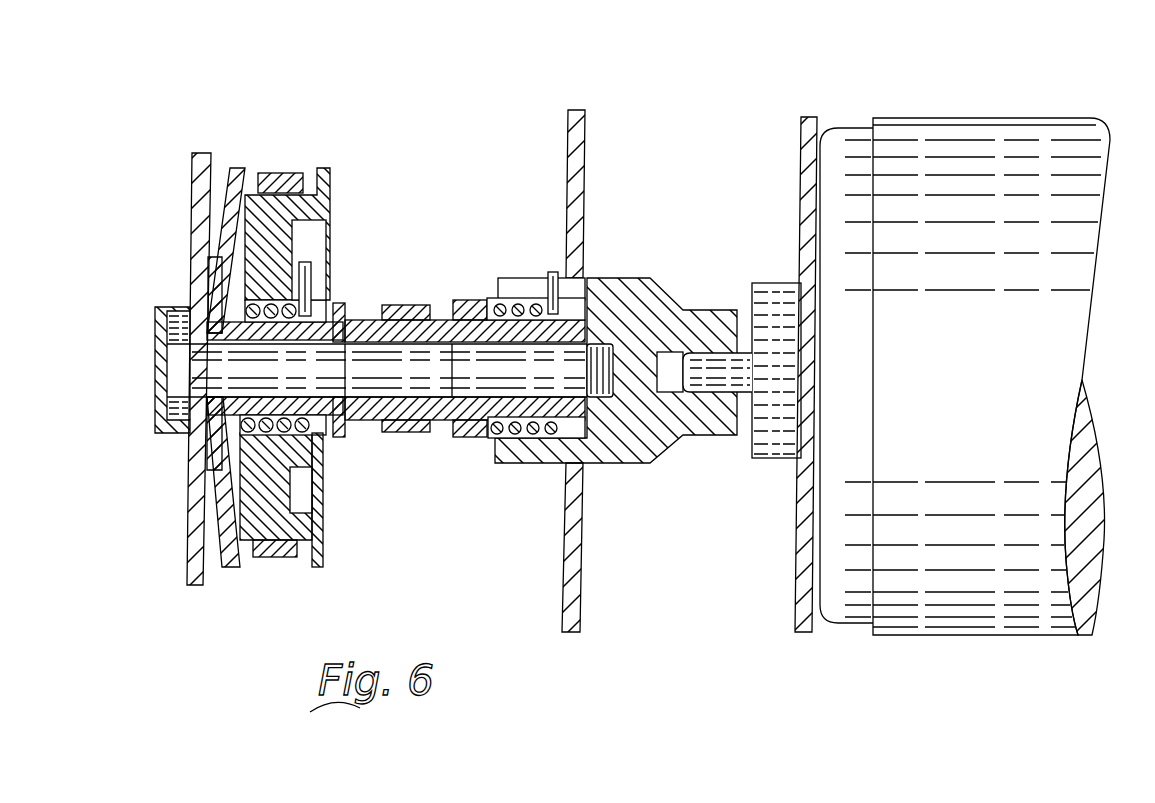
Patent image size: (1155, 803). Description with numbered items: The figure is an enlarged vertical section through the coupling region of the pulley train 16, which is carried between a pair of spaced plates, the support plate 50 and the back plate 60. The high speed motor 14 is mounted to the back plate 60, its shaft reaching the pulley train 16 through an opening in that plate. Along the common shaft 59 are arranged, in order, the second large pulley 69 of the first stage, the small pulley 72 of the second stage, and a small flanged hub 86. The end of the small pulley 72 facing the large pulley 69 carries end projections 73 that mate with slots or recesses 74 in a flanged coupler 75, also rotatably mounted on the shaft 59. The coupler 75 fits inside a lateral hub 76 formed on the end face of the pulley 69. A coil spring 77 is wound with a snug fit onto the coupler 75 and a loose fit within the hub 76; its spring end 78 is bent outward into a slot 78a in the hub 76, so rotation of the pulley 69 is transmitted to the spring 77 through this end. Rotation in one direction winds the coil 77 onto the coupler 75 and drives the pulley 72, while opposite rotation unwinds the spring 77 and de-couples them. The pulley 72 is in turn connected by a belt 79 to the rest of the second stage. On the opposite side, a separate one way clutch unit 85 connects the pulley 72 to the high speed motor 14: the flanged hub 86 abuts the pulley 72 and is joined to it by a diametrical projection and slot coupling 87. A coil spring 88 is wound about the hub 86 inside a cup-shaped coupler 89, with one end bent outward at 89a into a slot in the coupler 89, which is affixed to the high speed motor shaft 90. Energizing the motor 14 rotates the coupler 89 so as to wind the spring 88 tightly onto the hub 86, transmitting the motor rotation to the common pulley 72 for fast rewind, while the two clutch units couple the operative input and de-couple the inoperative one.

The high speed motor 14 is at (935, 118).
The pulley train 16 is at (307, 148).
The support plate 50 is at (195, 568).
The common shaft 59 is at (198, 377).
The back plate 60 is at (587, 127).
The second large pulley 69 is at (247, 215).
The small pulley 72 is at (440, 417).
The end projections 73 is at (345, 320).
The slots or recesses 74 is at (340, 430).
The flanged coupler 75 is at (333, 450).
The lateral hub 76 is at (253, 492).
The coil spring 77 is at (262, 418).
The spring end 78 is at (308, 282).
The slot 78a is at (318, 265).
The belt 79 is at (400, 305).
The one way clutch unit 85 is at (513, 437).
The small flanged hub 86 is at (470, 300).
The diametrical projection and slot coupling 87 is at (470, 430).
The coil spring 88 is at (550, 290).
The cup-shaped coupler 89 is at (637, 465).
The bent spring end 89a is at (551, 272).
The high speed motor shaft 90 is at (707, 357).